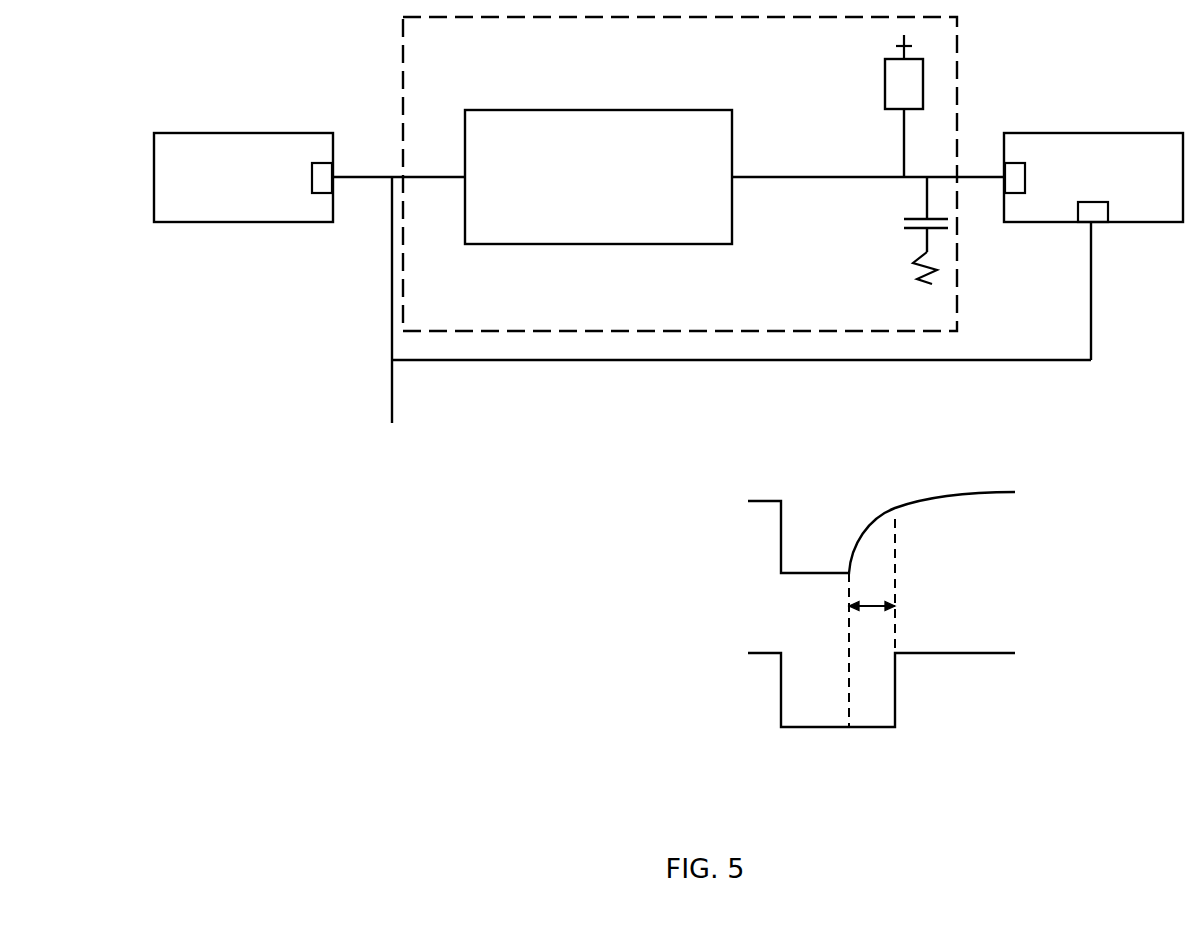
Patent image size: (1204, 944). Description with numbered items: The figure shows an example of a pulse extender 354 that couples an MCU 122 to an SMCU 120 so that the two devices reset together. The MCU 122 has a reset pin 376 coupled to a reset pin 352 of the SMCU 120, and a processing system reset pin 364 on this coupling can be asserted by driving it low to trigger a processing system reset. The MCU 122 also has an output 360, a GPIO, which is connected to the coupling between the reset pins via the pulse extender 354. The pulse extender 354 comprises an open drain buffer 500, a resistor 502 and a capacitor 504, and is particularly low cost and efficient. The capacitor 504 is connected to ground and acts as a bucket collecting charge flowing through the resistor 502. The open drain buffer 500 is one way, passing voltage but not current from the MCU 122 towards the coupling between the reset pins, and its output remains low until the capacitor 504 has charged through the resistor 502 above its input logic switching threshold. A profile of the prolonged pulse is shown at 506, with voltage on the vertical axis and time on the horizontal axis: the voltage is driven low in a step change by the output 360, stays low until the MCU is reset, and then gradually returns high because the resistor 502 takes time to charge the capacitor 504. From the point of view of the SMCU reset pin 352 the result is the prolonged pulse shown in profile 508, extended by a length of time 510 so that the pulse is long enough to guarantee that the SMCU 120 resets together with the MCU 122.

The SMCU 120 is at (243, 177).
The MCU 122 is at (1093, 177).
The reset pin 352 is at (321, 163).
The pulse extender 354 is at (680, 174).
The output 360 is at (1016, 163).
The processing system reset pin 364 is at (710, 350).
The reset pin 376 is at (1102, 223).
The open drain buffer 500 is at (598, 177).
The resistor 502 is at (923, 85).
The capacitor 504 is at (942, 229).
The profile of the prolonged pulse 506 is at (748, 539).
The profile 508 is at (750, 690).
The length of time 510 is at (877, 606).